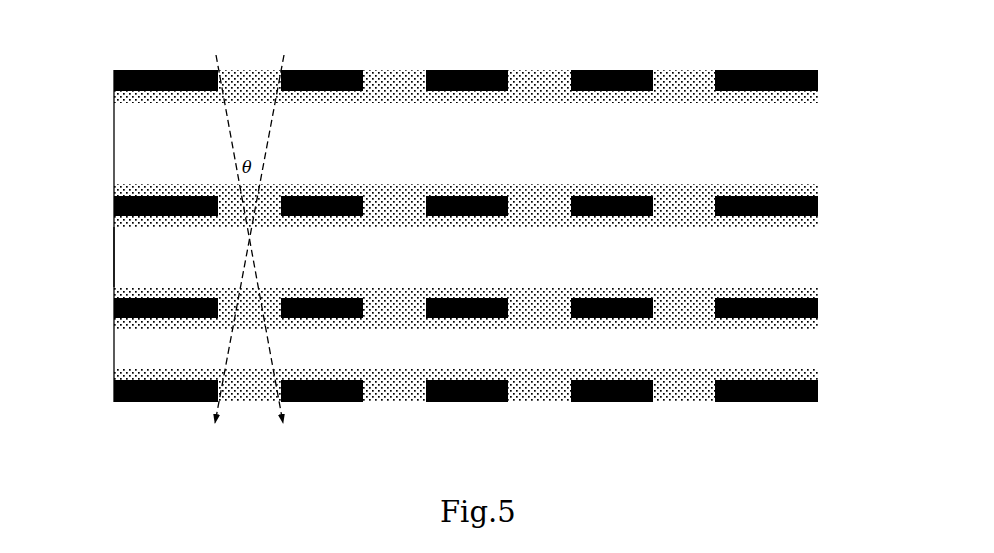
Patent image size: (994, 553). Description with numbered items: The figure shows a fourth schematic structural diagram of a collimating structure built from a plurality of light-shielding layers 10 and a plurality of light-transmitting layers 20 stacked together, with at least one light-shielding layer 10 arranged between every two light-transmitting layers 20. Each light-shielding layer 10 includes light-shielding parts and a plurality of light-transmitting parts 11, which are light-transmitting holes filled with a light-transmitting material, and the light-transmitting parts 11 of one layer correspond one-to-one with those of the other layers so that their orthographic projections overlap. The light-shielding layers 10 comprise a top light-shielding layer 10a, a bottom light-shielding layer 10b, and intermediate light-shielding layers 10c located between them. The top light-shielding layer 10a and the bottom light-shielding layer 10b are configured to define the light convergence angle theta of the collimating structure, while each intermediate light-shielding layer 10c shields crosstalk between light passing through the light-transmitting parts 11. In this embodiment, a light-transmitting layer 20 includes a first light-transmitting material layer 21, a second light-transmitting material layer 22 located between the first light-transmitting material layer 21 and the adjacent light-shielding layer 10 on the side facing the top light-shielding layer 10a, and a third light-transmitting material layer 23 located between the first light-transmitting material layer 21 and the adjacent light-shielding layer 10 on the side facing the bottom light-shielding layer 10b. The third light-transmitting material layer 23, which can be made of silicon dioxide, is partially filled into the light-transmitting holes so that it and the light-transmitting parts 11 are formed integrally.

The light-shielding layer 10 is at (523, 202).
The top light-shielding layer 10a is at (820, 75).
The bottom light-shielding layer 10b is at (508, 387).
The intermediate light-shielding layer 10c is at (820, 198).
The light-transmitting part 11 is at (510, 70).
The light-transmitting layer 20 is at (418, 236).
The first light-transmitting material layer 21 is at (130, 262).
The second light-transmitting material layer 22 is at (130, 224).
The third light-transmitting material layer 23 is at (435, 295).